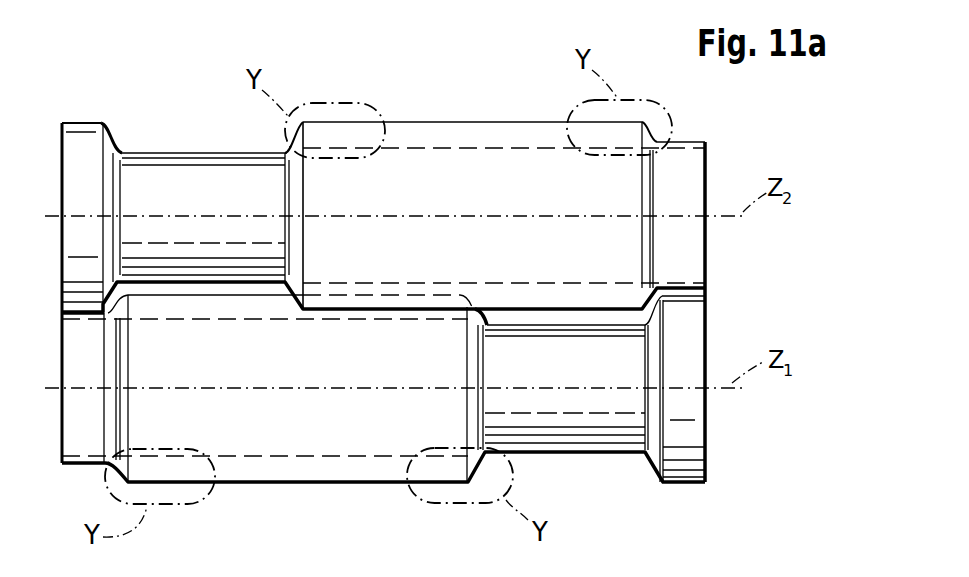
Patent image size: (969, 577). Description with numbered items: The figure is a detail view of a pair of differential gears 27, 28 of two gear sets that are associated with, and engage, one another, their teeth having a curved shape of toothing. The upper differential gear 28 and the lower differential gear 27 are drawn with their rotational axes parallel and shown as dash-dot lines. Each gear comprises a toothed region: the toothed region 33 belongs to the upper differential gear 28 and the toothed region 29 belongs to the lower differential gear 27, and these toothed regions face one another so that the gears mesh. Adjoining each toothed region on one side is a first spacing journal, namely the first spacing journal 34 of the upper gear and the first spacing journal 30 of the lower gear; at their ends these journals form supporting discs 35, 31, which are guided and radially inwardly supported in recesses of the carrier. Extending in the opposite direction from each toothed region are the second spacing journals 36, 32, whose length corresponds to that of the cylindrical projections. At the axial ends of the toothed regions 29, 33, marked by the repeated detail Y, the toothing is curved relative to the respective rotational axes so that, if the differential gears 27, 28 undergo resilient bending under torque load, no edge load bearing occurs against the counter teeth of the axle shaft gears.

The differential gear 27 is at (357, 447).
The differential gear 28 is at (525, 152).
The toothed region 29 is at (272, 474).
The first spacing journal 30 is at (593, 432).
The supporting disc 31 is at (687, 452).
The second spacing journal 32 is at (88, 443).
The toothed region 33 is at (438, 125).
The first spacing journal 34 is at (178, 170).
The supporting disc 35 is at (83, 140).
The second spacing journal 36 is at (690, 162).